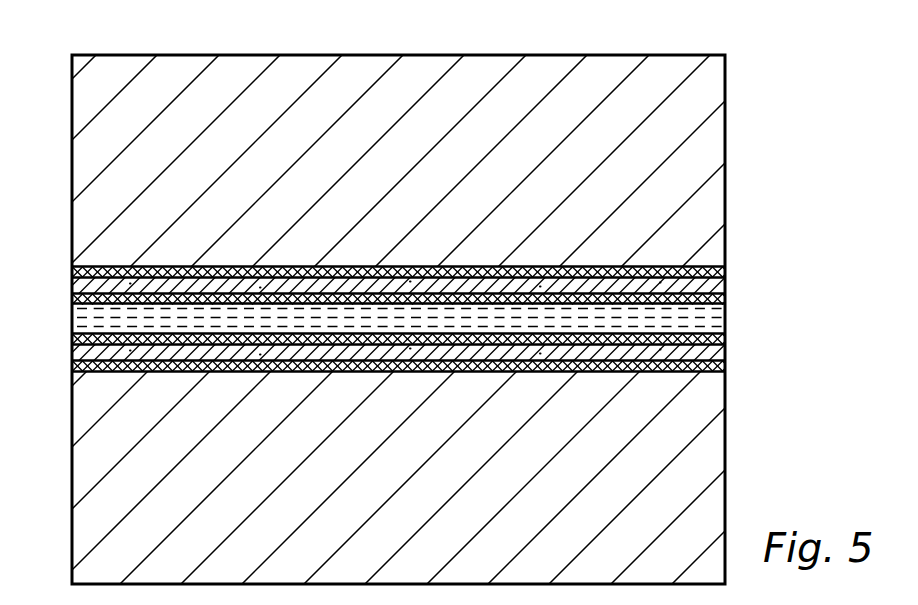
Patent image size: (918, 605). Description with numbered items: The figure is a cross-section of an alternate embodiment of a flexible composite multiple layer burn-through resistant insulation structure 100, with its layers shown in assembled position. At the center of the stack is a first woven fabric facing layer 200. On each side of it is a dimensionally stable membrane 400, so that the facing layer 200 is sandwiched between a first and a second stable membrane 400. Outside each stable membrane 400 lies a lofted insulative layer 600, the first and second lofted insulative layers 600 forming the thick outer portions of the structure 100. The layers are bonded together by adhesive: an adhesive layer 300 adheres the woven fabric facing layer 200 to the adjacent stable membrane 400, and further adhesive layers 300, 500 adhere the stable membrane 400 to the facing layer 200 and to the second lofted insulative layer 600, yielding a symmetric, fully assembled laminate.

The flexible composite multiple layer burn-through resistant insulation structure 100 is at (196, 19).
The first woven fabric facing layer 200 is at (72, 325).
The adhesive layer 300 is at (72, 296).
The dimensionally stable membrane 400 is at (72, 352).
The adhesive layer 500 is at (72, 272).
The lofted insulative layer 600 is at (725, 162).